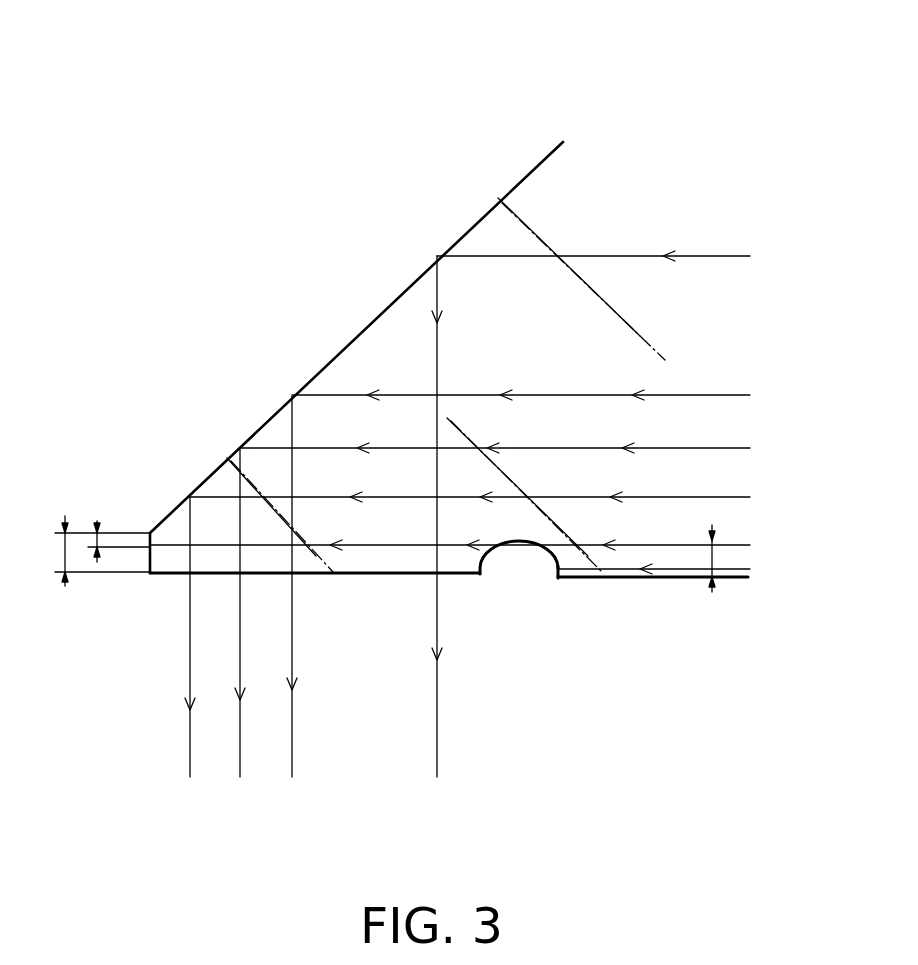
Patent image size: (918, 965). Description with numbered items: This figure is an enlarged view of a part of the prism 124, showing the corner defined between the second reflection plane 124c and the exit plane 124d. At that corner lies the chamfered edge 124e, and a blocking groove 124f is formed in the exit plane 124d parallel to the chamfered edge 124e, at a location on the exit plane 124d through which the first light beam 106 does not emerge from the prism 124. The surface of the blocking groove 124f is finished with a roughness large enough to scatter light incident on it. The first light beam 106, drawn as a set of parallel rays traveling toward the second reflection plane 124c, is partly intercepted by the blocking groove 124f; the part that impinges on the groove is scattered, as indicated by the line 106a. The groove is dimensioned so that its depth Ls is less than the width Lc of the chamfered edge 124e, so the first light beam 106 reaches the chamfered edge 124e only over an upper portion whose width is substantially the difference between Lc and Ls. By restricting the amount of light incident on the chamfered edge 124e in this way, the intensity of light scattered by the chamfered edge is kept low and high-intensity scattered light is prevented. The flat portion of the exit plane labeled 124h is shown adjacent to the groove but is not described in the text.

The prism 124 is at (356, 80).
The second reflection plane 124c is at (350, 340).
The exit plane 124d is at (462, 578).
The chamfered edge 124e is at (147, 558).
The blocking groove 124f is at (544, 556).
The bottom flat surface of prism 124h is at (448, 586).
The first light beam 106 is at (752, 250).
The line indicating scattered light 106a is at (660, 572).
The width of chamfered edge Lc is at (92, 551).
The depth of blocking groove Ls is at (712, 557).